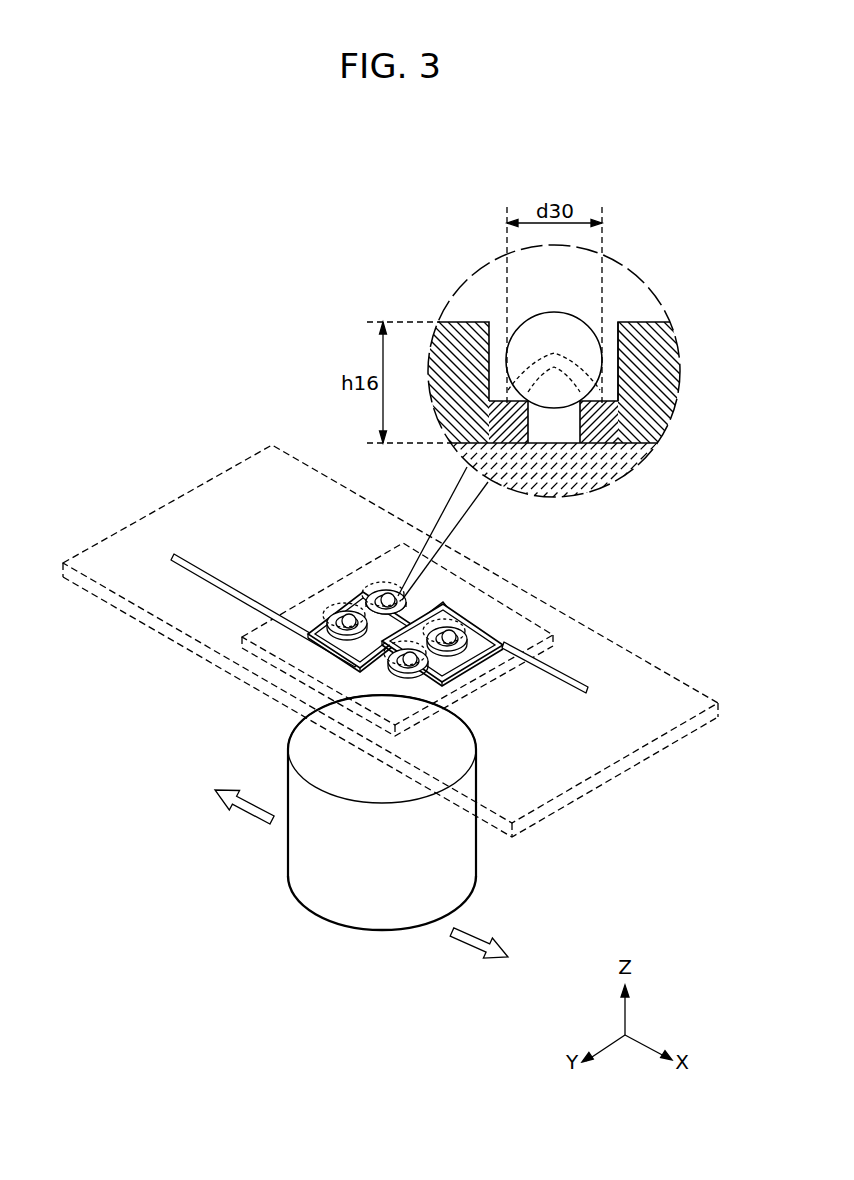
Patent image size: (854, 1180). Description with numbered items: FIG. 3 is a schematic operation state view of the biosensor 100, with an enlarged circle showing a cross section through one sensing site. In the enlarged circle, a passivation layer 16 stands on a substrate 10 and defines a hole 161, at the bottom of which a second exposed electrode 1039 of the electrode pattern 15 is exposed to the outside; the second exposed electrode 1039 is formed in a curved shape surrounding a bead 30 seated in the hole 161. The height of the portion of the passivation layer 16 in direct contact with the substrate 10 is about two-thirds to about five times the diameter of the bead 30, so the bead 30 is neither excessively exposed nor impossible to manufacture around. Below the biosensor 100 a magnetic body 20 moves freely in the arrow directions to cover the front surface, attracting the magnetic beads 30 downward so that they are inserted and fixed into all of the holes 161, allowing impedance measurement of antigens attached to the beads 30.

The biosensor 100 is at (408, 609).
The second exposed electrode 1039 is at (398, 602).
The substrate 10 is at (623, 472).
The electrode pattern 15 is at (603, 423).
The passivation layer 16 is at (673, 333).
The hole 161 is at (608, 327).
The bead 30 is at (530, 316).
The magnetic body 20 is at (317, 918).